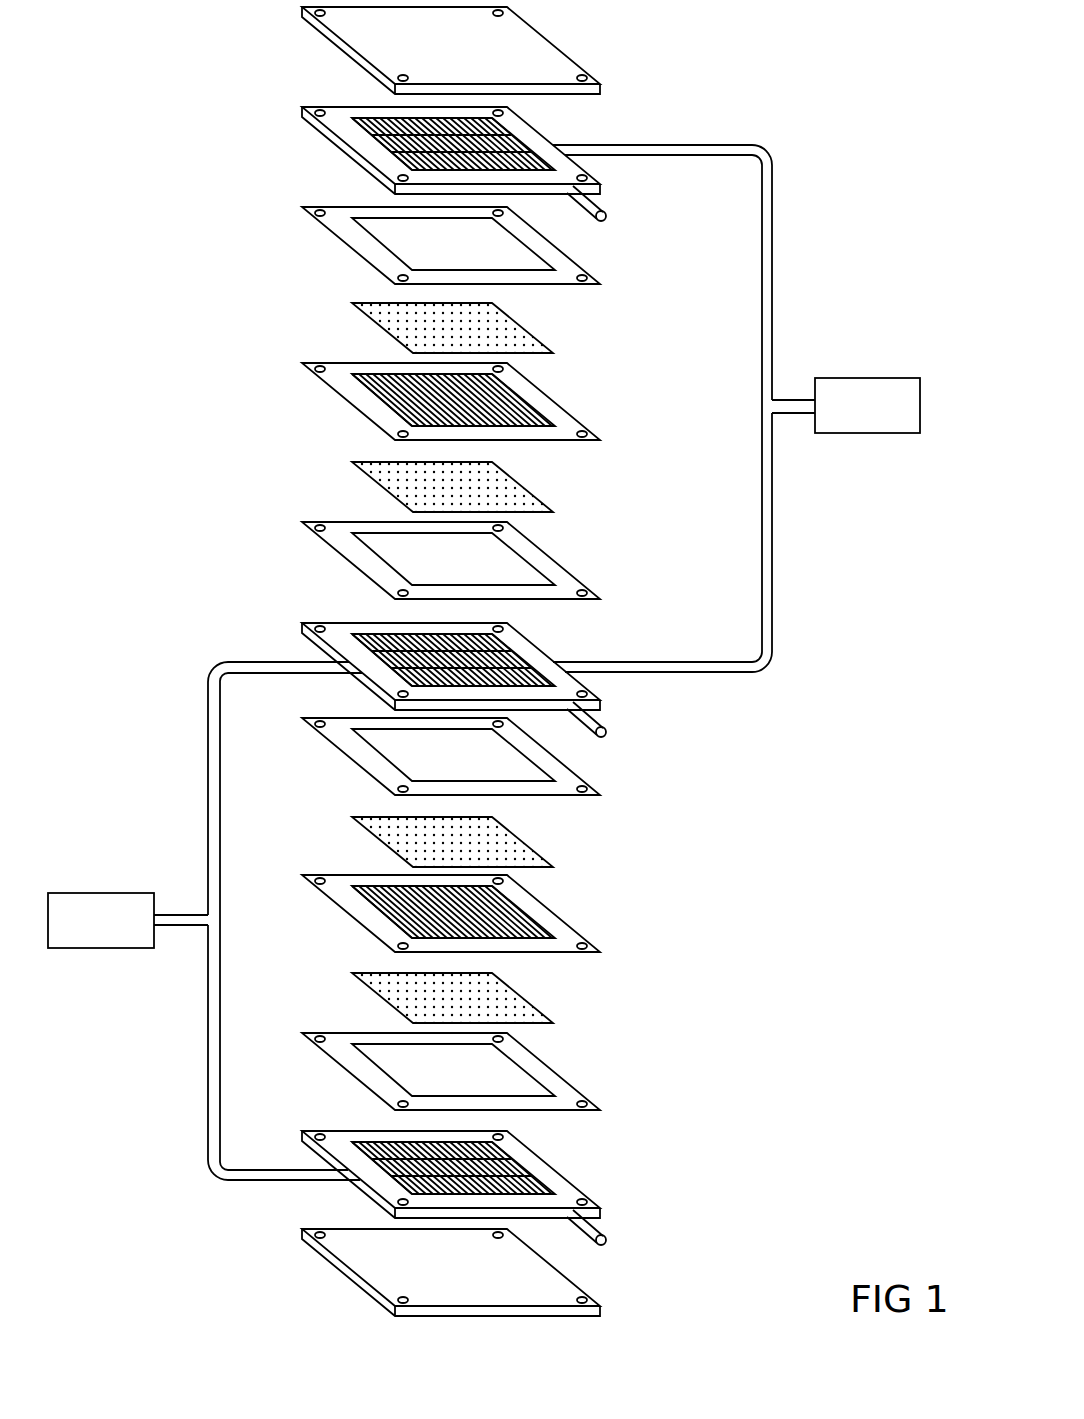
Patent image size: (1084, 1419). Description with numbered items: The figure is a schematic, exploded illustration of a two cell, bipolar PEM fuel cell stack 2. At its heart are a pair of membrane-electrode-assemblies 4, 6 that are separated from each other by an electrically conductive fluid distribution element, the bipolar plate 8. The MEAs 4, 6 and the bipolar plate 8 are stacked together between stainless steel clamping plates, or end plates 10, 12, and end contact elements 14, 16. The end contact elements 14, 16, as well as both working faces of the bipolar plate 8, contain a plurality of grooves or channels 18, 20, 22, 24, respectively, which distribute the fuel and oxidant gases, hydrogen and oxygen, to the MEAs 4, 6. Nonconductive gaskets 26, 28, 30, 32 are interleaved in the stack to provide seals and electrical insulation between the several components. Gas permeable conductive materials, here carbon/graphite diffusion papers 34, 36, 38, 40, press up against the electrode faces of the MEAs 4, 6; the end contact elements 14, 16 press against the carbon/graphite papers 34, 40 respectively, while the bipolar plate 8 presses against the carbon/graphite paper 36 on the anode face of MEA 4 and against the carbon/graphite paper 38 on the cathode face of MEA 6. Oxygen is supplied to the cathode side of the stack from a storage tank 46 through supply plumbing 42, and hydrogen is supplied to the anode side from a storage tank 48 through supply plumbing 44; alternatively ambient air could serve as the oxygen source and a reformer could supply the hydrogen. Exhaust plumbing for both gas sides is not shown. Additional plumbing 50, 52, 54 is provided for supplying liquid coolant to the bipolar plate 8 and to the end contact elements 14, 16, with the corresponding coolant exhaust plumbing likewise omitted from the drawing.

The fuel cell stack 2 is at (812, 125).
The membrane-electrode-assembly 4 is at (342, 398).
The membrane-electrode-assembly 6 is at (578, 926).
The bipolar plate 8 is at (427, 655).
The end plate 10 is at (340, 40).
The end plate 12 is at (590, 1291).
The end contact element 14 is at (452, 134).
The end contact element 16 is at (513, 1162).
The channels 18 is at (512, 143).
The channels 20 is at (370, 645).
The channels 22 is at (552, 714).
The channels 24 is at (522, 1165).
The nonconductive gasket 26 is at (325, 224).
The nonconductive gasket 28 is at (330, 540).
The nonconductive gasket 30 is at (600, 795).
The nonconductive gasket 32 is at (556, 1083).
The carbon/graphite diffusion paper 34 is at (356, 307).
The carbon/graphite diffusion paper 36 is at (360, 468).
The carbon/graphite diffusion paper 38 is at (553, 848).
The carbon/graphite diffusion paper 40 is at (528, 1005).
The supply plumbing 42 is at (774, 578).
The supply plumbing 44 is at (212, 706).
The storage tank 46 is at (862, 378).
The storage tank 48 is at (68, 893).
The plumbing 50 is at (606, 212).
The plumbing 52 is at (607, 722).
The plumbing 54 is at (608, 1237).